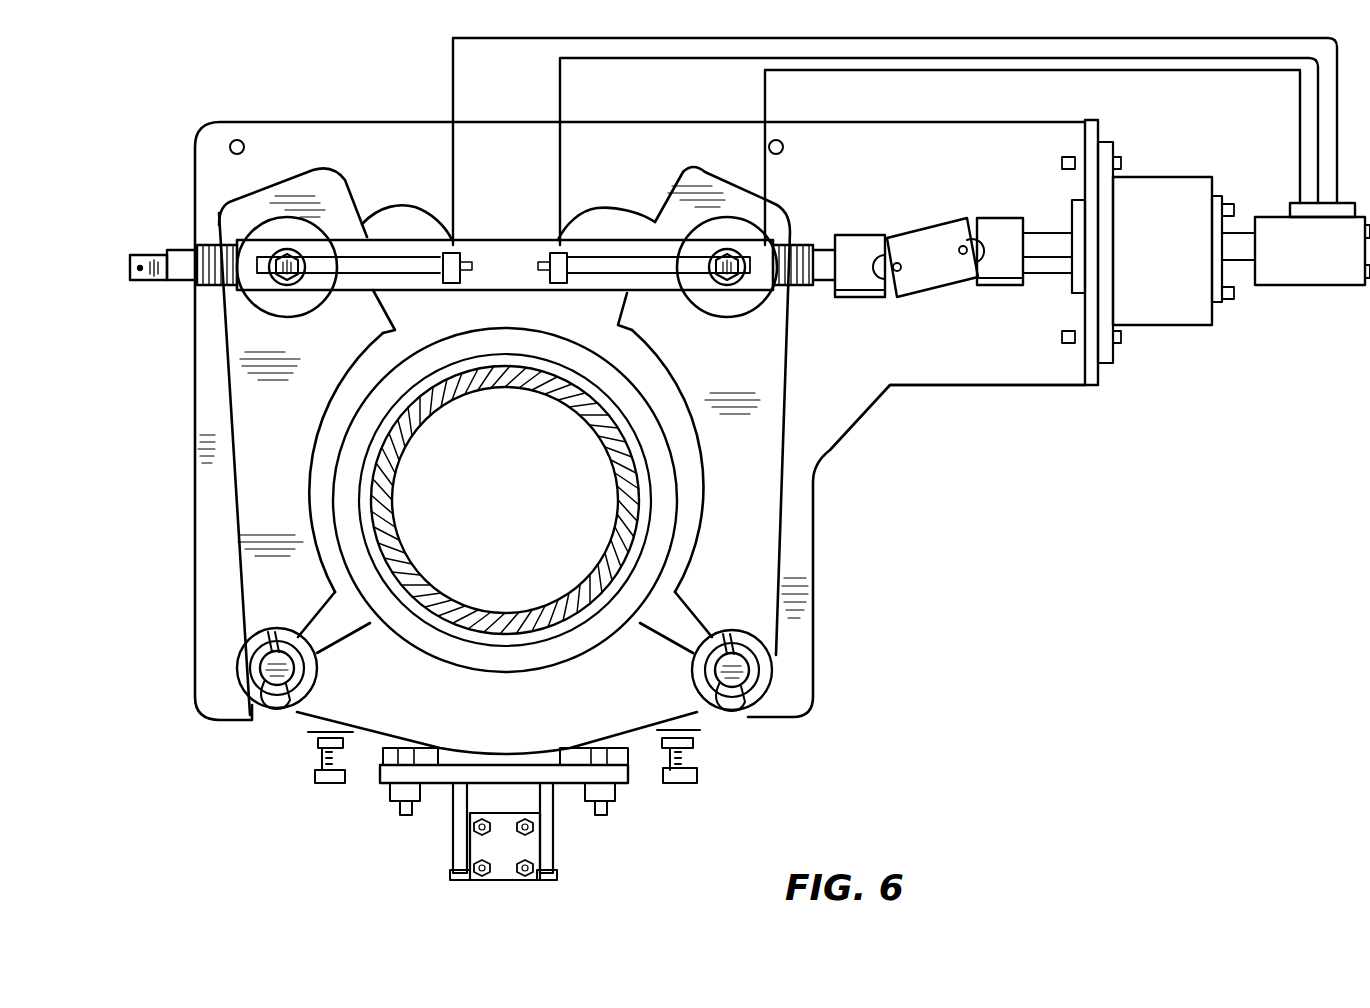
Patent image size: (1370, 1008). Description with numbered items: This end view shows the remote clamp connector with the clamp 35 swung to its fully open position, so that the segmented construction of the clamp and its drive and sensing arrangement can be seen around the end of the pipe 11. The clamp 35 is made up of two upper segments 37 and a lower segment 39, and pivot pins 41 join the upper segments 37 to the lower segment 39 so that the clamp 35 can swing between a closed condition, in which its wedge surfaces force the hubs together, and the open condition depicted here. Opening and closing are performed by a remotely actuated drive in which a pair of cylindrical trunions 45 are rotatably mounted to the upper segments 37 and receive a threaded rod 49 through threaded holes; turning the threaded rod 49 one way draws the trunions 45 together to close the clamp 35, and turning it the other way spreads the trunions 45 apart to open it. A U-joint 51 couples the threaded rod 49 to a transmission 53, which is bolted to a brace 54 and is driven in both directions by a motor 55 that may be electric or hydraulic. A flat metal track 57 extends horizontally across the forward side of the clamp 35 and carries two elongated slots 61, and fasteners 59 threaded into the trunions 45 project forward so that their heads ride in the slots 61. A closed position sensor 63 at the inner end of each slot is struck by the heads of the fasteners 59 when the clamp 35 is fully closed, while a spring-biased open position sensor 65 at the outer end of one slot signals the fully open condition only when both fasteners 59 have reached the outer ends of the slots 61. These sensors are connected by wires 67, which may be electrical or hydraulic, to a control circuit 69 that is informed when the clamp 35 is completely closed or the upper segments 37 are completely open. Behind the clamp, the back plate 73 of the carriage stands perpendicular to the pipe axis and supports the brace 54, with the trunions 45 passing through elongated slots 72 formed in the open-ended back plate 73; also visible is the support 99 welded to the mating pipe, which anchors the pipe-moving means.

The pipe 11 is at (560, 383).
The clamp 35 is at (795, 495).
The upper segments 37 is at (752, 544).
The lower segment 39 is at (688, 710).
The pivot pins 41 is at (760, 662).
The trunions 45 is at (738, 228).
The threaded rod 49 is at (200, 292).
The U-joint 51 is at (933, 275).
The transmission 53 is at (1178, 302).
The brace 54 is at (1103, 372).
The motor 55 is at (1308, 268).
The track 57 is at (478, 252).
The fasteners 59 is at (748, 252).
The elongated slots 61 is at (365, 255).
The closed position sensor 63 is at (472, 290).
The open position sensor 65 is at (757, 298).
The wires 67 is at (455, 68).
The control circuit 69 is at (1293, 213).
The elongated slots 72 is at (603, 213).
The back plate 73 is at (952, 363).
The support 99 is at (530, 795).